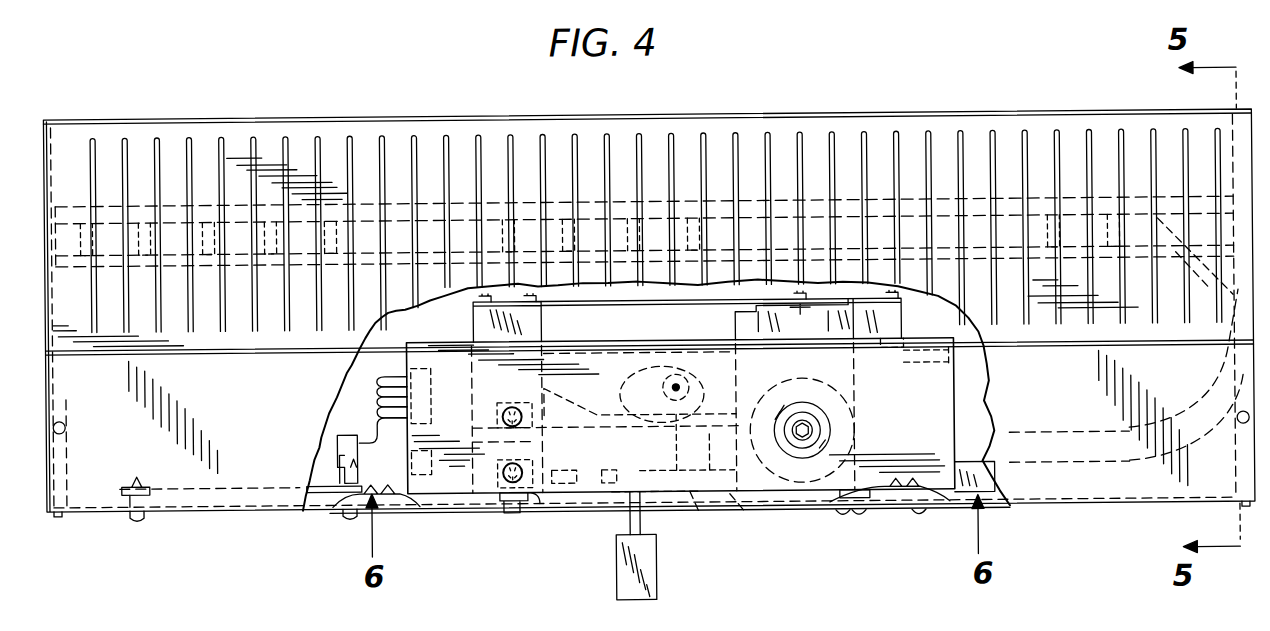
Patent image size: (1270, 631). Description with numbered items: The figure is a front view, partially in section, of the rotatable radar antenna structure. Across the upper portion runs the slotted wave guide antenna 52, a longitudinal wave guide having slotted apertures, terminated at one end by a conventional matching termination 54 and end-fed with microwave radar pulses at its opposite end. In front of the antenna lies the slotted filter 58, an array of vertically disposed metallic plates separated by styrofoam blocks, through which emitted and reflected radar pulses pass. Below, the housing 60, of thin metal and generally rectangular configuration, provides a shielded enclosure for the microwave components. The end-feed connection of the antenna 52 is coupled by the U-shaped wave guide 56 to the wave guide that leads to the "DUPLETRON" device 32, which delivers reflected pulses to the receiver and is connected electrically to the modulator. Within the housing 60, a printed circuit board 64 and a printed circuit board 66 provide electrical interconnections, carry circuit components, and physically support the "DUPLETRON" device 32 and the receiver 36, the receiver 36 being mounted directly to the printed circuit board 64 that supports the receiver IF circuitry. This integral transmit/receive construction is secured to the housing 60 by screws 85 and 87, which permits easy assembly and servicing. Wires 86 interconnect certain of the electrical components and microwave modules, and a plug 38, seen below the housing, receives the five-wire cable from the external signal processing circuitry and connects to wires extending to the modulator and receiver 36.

The "DUPLETRON" device 32 is at (676, 514).
The receiver 36 is at (475, 326).
The plug 38 is at (615, 575).
The slotted wave guide antenna 52 is at (590, 222).
The matching termination 54 is at (90, 230).
The U-shaped wave guide 56 is at (1203, 400).
The slotted filter 58 is at (337, 187).
The housing 60 is at (1083, 111).
The printed circuit board 64 is at (588, 308).
The printed circuit board 66 is at (408, 362).
The screw 85 is at (845, 510).
The wires 86 is at (378, 408).
The screw 87 is at (515, 517).